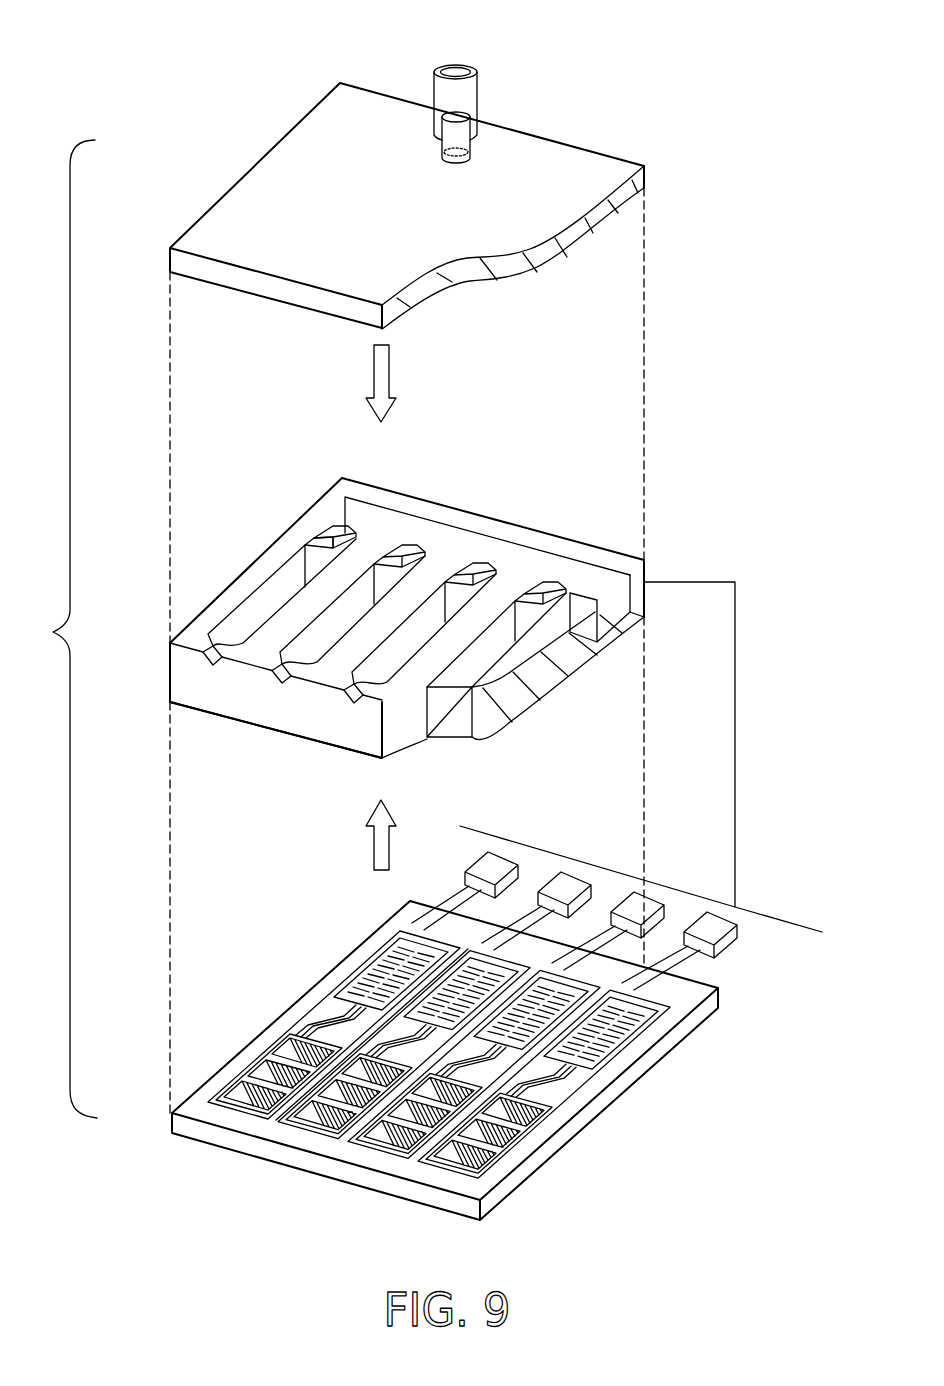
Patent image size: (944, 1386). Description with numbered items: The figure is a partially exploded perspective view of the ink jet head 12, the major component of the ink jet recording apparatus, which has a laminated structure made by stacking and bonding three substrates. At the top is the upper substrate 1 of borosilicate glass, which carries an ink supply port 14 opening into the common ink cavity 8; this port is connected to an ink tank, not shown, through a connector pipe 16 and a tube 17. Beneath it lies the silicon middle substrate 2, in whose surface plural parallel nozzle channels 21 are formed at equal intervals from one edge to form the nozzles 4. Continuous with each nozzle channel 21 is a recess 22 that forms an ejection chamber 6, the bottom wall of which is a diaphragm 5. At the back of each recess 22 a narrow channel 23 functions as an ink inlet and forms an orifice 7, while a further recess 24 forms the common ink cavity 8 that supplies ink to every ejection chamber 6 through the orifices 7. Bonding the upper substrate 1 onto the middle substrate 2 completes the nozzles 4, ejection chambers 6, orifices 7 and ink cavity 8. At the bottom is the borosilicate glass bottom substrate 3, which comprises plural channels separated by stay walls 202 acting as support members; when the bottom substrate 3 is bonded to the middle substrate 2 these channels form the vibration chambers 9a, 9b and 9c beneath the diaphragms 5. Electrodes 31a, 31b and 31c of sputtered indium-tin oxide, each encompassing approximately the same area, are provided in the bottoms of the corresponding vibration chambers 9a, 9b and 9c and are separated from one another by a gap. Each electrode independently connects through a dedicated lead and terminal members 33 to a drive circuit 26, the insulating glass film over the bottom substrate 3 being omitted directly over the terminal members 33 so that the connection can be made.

The upper substrate 1 is at (603, 188).
The tube 17 is at (472, 88).
The connector pipe 16 is at (472, 118).
The ink supply port 14 is at (472, 147).
The middle substrate 2 is at (436, 624).
The nozzle 4 is at (220, 673).
The diaphragm 5 is at (457, 743).
The ejection chamber 6 is at (265, 600).
The recess 22 is at (237, 625).
The nozzle channel 21 is at (203, 652).
The orifice 7 is at (317, 540).
The narrow channel 23 is at (323, 537).
The common ink cavity 8 is at (405, 533).
The recess 24 is at (462, 535).
The ink jet head 12 is at (55, 629).
The bottom substrate 3 is at (227, 1140).
The stay wall 202 is at (362, 1107).
The vibration chamber 9a is at (253, 1093).
The vibration chamber 9b is at (290, 1062).
The vibration chamber 9c is at (328, 1030).
The terminal member 33 is at (660, 1017).
The electrode 31a is at (503, 1162).
The electrode 31b is at (550, 1133).
The electrode 31c is at (573, 1090).
The drive circuit 26 is at (735, 945).